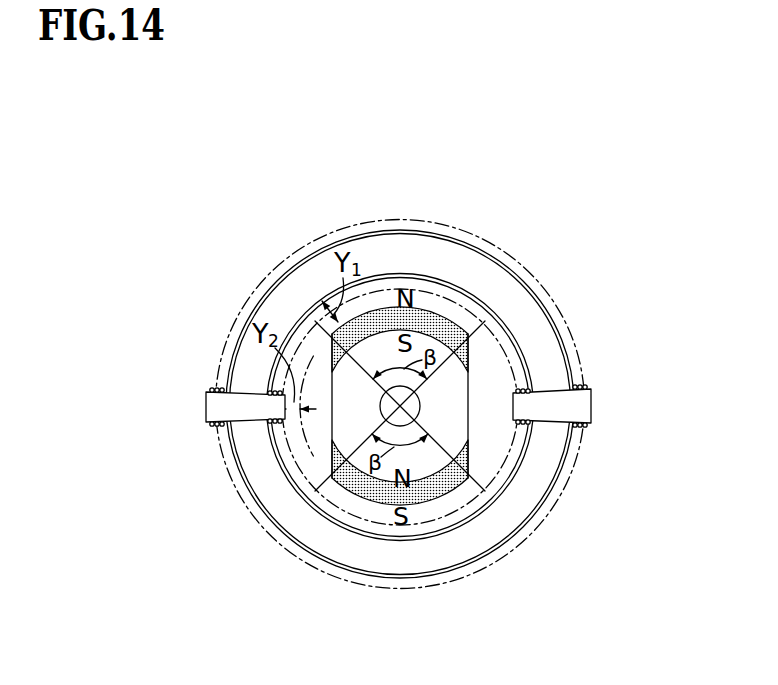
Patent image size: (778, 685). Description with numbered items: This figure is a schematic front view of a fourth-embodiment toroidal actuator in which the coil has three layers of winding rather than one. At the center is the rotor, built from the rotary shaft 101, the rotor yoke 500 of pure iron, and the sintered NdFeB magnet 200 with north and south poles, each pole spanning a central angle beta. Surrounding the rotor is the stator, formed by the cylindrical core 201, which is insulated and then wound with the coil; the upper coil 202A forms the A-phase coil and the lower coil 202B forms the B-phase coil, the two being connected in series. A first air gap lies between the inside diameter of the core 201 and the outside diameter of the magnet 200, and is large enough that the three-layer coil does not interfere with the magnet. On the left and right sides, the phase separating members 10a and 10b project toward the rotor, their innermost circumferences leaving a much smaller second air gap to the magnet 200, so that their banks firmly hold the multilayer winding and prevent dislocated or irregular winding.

The upper coil 202A is at (453, 218).
The lower coil 202B is at (449, 598).
The cylindrical core 201 is at (542, 458).
The magnet 200 is at (437, 325).
The rotor yoke 500 is at (452, 380).
The rotary shaft 101 is at (421, 409).
The phase separating member 10a is at (588, 403).
The phase separating member 10b is at (206, 392).